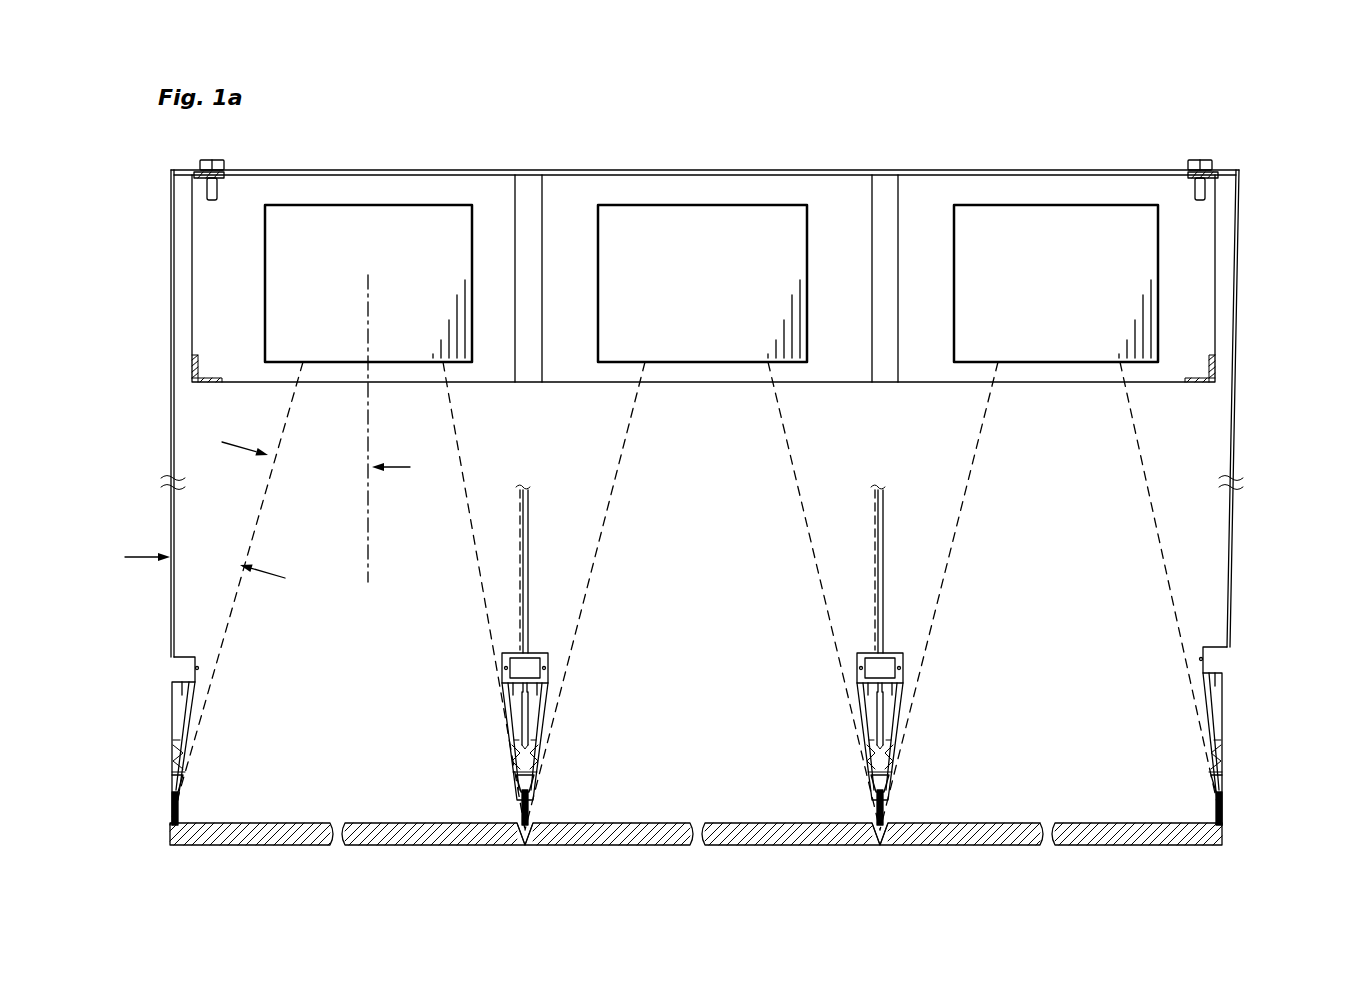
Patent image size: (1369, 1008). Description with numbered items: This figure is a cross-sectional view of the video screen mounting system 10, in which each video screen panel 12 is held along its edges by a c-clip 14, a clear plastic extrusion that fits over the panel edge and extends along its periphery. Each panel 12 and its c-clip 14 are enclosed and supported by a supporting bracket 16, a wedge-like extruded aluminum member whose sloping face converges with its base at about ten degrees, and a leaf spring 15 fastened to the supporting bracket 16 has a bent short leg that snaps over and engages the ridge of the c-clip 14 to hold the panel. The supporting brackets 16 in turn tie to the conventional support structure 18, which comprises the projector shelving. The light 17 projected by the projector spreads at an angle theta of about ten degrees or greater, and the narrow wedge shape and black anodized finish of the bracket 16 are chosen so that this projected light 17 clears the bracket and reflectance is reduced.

The video screen mounting system 10 is at (1280, 418).
The video screen panel 12 is at (282, 844).
The c-clip 14 is at (170, 838).
The leaf spring 15 is at (185, 765).
The supporting bracket 16 is at (170, 755).
The light 17 is at (222, 635).
The conventional support structure 18 is at (172, 592).